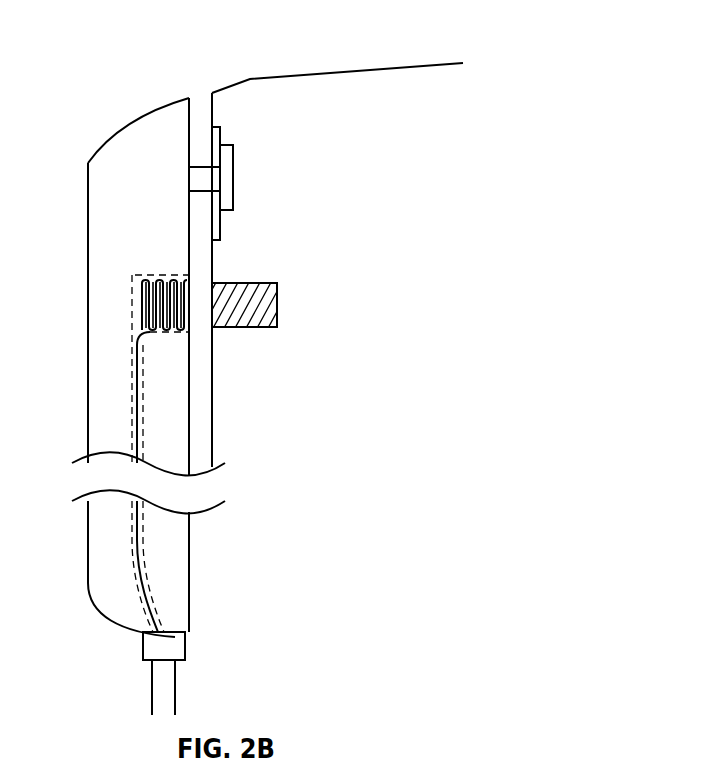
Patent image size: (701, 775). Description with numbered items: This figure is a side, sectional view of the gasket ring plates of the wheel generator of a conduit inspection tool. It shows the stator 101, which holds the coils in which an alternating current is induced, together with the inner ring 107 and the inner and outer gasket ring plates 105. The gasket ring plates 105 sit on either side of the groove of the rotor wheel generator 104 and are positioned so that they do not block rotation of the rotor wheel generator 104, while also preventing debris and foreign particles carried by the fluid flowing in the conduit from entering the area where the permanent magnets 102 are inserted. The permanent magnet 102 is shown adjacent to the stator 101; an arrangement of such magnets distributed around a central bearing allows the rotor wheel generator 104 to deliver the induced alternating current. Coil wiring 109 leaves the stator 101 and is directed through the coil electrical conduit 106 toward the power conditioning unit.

The stator 101 is at (137, 125).
The permanent magnet 102 is at (265, 338).
The rotor wheel generator 104 is at (418, 52).
The gasket ring plates 105 is at (228, 130).
The coil electrical conduit 106 is at (133, 687).
The inner ring 107 is at (200, 162).
The coil wiring 109 is at (147, 583).